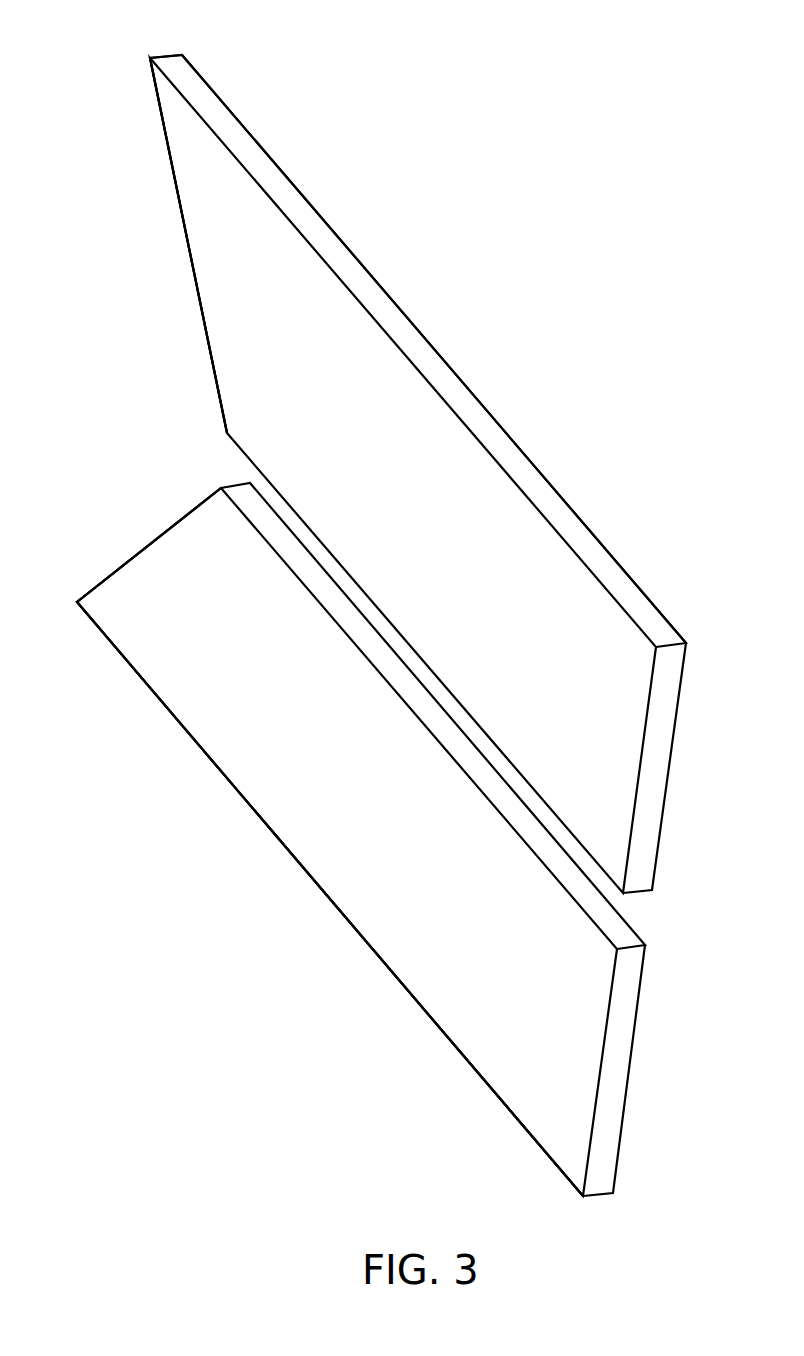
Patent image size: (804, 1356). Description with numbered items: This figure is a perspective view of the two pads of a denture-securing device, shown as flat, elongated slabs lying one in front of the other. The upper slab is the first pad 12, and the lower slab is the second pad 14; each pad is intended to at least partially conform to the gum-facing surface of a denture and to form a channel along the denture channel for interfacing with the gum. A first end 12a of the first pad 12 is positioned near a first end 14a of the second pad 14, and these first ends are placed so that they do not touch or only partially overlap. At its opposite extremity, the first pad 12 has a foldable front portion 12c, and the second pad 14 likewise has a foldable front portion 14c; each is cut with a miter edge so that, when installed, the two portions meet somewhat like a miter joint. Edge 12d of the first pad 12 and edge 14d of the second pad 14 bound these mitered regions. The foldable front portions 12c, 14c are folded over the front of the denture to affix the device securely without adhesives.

The first pad 12 is at (417, 397).
The first end of the first pad 12a is at (205, 81).
The foldable front portion of the first pad 12c is at (150, 58).
The side edge of first panel 12d is at (184, 226).
The second pad 14 is at (322, 868).
The first end of the second pad 14a is at (101, 635).
The foldable front portion of the second pad 14c is at (77, 602).
The angled edge of second panel 14d is at (146, 547).